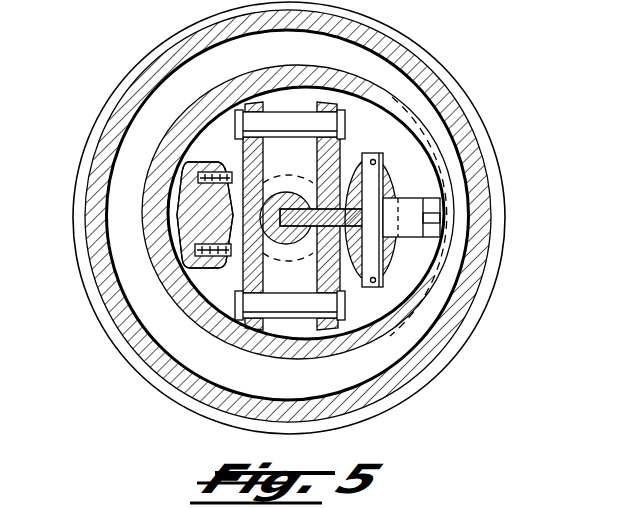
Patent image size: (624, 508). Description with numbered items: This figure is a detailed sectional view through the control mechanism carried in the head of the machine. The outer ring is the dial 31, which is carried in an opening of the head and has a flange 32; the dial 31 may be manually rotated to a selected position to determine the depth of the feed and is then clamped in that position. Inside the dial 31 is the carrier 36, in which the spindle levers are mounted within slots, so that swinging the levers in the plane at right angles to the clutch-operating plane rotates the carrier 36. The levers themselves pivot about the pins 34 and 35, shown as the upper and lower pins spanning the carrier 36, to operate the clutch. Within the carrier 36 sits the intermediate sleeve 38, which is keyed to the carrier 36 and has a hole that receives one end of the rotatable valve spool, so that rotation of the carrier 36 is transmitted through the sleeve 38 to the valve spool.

The dial 31 is at (97, 206).
The flange 32 is at (97, 132).
The pin 34 is at (292, 123).
The pin 35 is at (292, 303).
The carrier 36 is at (252, 150).
The intermediate sleeve 38 is at (245, 279).